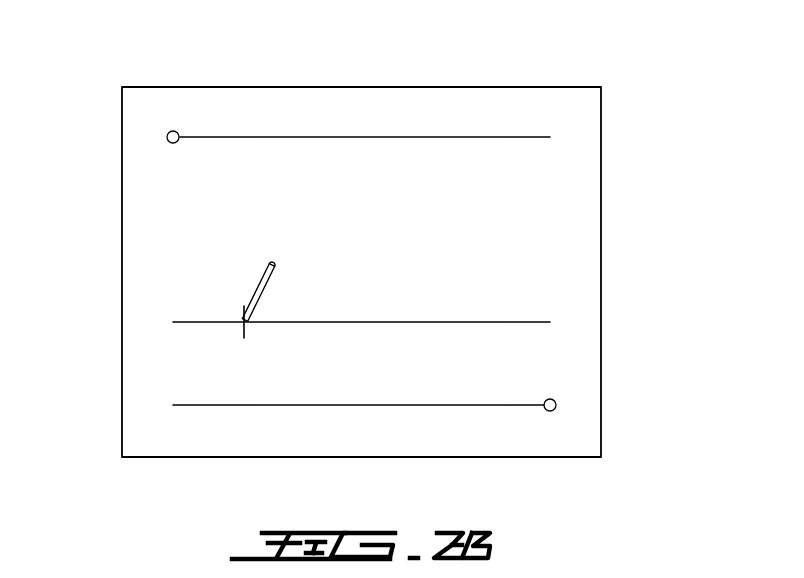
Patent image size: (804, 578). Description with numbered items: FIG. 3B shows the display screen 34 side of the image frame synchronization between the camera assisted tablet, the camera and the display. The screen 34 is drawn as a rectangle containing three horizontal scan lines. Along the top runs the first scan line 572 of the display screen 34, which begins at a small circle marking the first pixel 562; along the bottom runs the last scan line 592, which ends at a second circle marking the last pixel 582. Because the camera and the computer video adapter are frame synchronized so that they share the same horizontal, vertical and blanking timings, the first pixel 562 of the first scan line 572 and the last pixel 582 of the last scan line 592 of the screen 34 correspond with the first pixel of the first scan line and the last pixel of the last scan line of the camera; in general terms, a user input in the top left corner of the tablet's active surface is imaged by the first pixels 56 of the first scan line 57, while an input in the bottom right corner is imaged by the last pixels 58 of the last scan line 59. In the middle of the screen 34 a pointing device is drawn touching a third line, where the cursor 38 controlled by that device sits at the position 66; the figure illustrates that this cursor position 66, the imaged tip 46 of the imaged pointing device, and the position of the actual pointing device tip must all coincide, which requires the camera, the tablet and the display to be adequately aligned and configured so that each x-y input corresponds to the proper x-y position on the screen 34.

The display screen 34 is at (585, 204).
The cursor 38 is at (243, 330).
The imaged tip 46 is at (245, 328).
The first pixels 56 is at (182, 91).
The first pixel 562 is at (173, 131).
The first scan line 57 is at (365, 88).
The first scan line 572 is at (302, 137).
The last pixels 58 is at (597, 390).
The last pixel 582 is at (556, 403).
The last scan line 59 is at (358, 461).
The last scan line 592 is at (358, 407).
The position of the cursor 66 is at (244, 322).